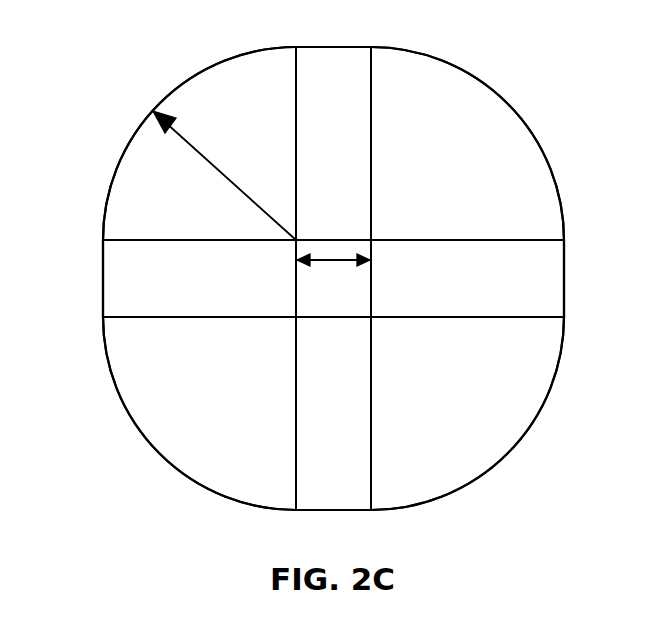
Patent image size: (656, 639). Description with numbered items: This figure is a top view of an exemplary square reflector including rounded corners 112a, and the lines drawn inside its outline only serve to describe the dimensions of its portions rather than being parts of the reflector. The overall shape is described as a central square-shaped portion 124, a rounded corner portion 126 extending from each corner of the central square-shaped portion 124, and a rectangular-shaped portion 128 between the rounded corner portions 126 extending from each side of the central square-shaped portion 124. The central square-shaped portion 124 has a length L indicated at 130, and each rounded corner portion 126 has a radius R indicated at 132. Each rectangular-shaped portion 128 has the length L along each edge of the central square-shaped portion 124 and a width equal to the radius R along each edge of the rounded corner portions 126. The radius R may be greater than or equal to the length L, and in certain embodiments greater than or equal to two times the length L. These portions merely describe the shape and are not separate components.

The square reflector including rounded corners 112a is at (503, 54).
The central square-shaped portion 124 is at (320, 300).
The rounded corner portion 126 is at (227, 84).
The rectangular-shaped portion 128 is at (335, 62).
The length L 130 is at (330, 262).
The radius R 132 is at (203, 153).